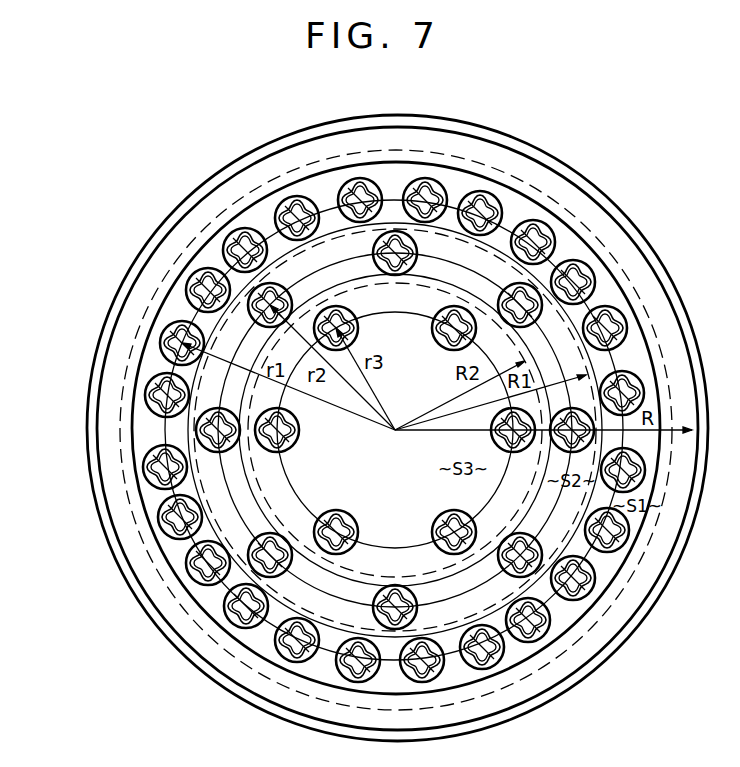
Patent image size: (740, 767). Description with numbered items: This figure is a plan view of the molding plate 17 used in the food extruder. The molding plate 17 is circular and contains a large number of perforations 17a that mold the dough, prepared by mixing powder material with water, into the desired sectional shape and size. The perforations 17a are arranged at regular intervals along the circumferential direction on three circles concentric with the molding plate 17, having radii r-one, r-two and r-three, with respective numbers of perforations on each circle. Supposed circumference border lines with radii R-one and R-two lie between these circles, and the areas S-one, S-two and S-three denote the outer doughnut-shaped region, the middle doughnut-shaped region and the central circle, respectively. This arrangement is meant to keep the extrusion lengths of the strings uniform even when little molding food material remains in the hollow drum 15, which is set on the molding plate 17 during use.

The hollow drum 15 is at (612, 219).
The molding plate 17 is at (650, 250).
The perforations 17a is at (472, 303).